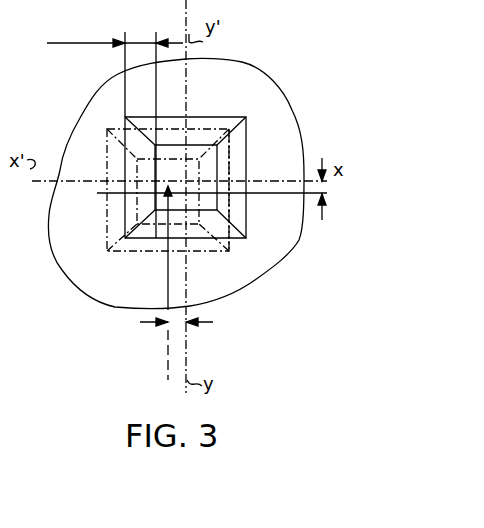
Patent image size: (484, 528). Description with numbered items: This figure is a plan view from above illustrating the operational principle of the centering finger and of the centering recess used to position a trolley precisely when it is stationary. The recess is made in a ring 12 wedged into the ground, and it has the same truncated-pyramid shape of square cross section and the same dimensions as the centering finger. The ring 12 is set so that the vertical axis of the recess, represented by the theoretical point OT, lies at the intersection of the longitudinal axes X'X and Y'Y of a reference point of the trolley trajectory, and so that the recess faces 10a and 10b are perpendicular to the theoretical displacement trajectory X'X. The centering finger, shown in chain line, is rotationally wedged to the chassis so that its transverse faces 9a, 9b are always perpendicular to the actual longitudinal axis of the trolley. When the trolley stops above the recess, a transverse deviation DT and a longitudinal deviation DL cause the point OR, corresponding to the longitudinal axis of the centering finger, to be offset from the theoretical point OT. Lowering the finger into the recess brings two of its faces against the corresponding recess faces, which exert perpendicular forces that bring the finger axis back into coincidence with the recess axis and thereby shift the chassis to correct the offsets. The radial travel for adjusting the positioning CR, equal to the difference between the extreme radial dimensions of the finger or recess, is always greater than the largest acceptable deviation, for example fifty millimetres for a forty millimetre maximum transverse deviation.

The transverse face of the centering finger 9a is at (110, 247).
The transverse face of the centering finger 9b is at (229, 249).
The face of the centering recess 10a is at (125, 168).
The face of the centering recess 10b is at (185, 182).
The ring 12 is at (256, 276).
The radial travel for adjusting the positioning CR is at (72, 42).
The point of the longitudinal axis of the centering finger OR is at (97, 193).
The theoretical point of the recess axis OT is at (240, 167).
The transverse deviation DT is at (322, 160).
The longitudinal deviation DL is at (213, 322).